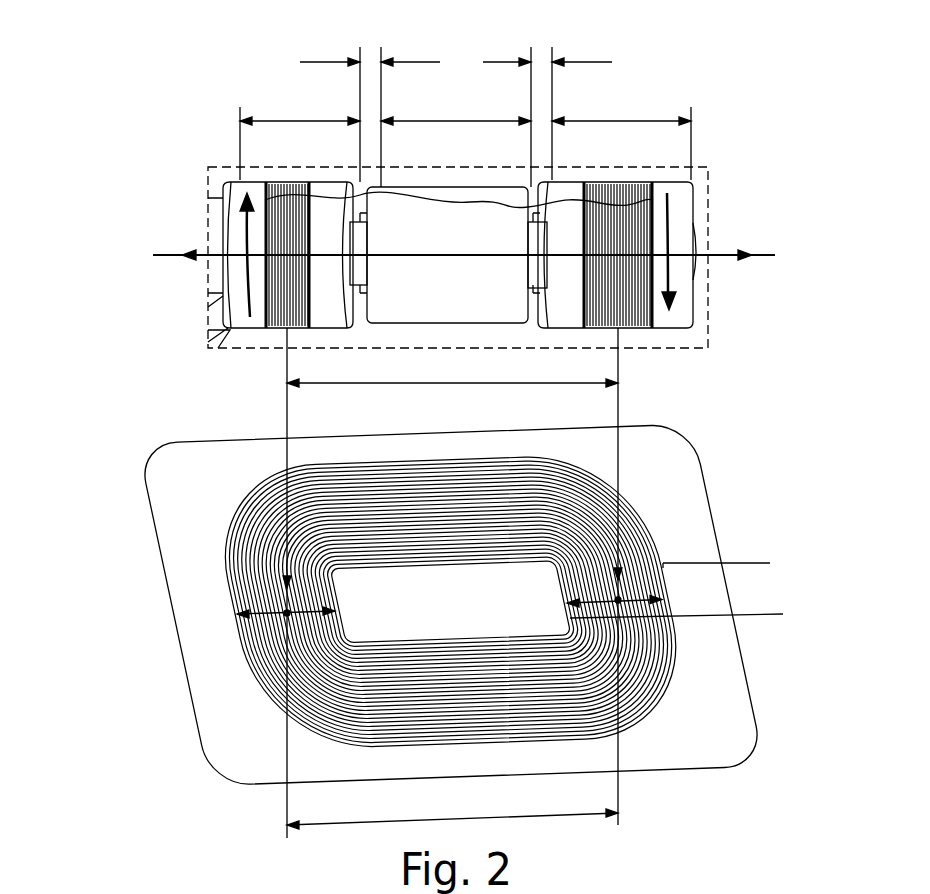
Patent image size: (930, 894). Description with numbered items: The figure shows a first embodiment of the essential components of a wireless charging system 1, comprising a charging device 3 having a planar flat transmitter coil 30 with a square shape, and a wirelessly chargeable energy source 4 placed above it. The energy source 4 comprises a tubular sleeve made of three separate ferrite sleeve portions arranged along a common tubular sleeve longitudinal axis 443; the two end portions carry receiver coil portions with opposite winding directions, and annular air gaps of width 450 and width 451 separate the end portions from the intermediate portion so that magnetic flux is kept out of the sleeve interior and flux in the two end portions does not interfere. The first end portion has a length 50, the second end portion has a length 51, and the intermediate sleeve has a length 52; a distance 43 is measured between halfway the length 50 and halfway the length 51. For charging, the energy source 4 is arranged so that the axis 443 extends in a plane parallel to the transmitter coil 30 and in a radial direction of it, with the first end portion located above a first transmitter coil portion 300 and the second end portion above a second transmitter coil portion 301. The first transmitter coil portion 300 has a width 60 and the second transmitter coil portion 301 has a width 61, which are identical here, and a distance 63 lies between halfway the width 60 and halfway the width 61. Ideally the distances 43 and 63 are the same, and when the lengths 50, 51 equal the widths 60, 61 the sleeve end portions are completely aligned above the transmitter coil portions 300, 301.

The wireless charging system 1 is at (131, 393).
The wirelessly chargeable energy source 4 is at (186, 204).
The distance 43 is at (287, 383).
The tubular sleeve longitudinal axis 443 is at (758, 256).
The width of annular gap 450 is at (410, 62).
The width of annular gap 451 is at (590, 62).
The length of first tubular sleeve end portion 50 is at (280, 121).
The length of second tubular sleeve end portion 51 is at (668, 121).
The length of intermediate sleeve 52 is at (478, 121).
The charging device 3 is at (762, 653).
The planar flat transmitter coil 30 is at (527, 510).
The first transmitter coil portion 300 is at (270, 635).
The second transmitter coil portion 301 is at (653, 690).
The width of first transmitter coil portion 60 is at (245, 612).
The width of second transmitter coil portion 61 is at (637, 595).
The distance 63 is at (553, 815).